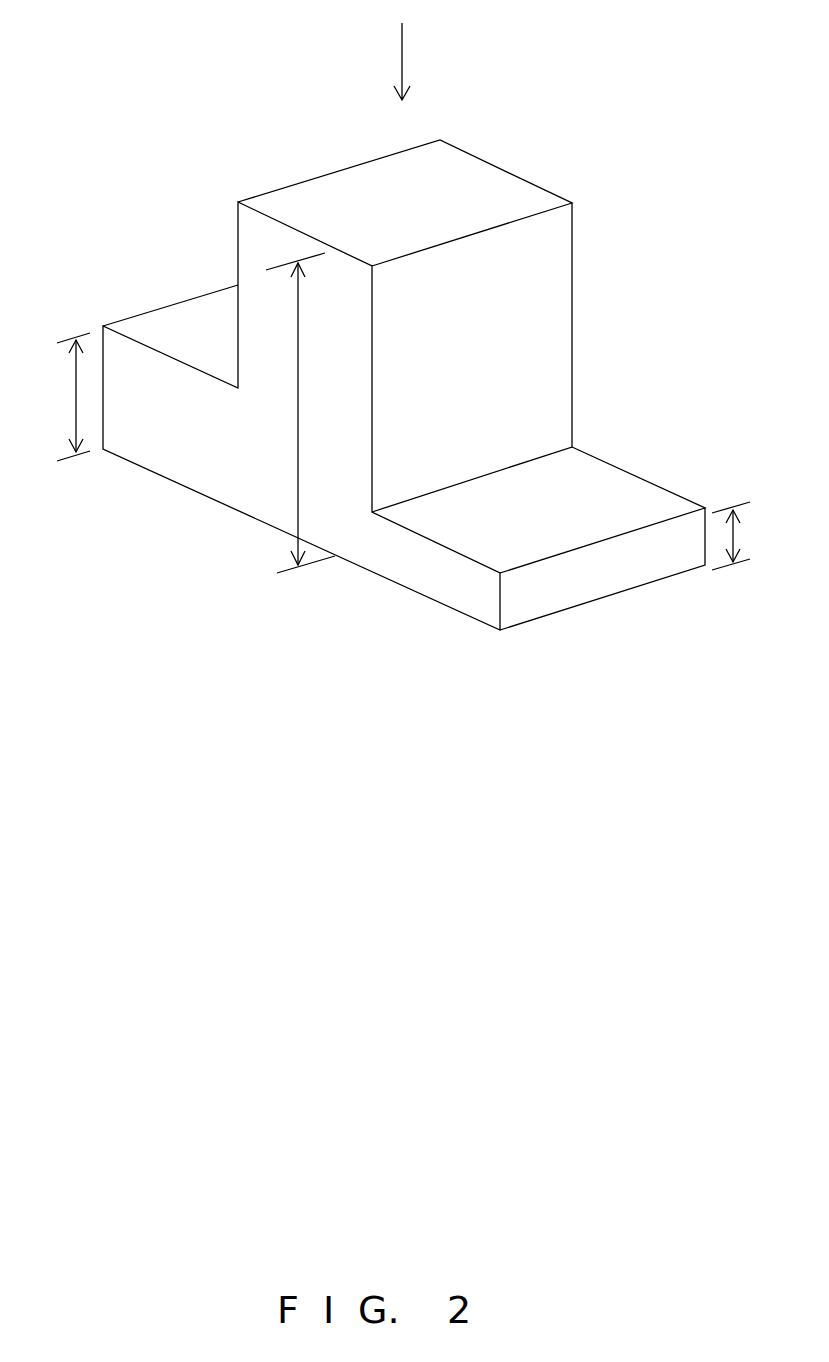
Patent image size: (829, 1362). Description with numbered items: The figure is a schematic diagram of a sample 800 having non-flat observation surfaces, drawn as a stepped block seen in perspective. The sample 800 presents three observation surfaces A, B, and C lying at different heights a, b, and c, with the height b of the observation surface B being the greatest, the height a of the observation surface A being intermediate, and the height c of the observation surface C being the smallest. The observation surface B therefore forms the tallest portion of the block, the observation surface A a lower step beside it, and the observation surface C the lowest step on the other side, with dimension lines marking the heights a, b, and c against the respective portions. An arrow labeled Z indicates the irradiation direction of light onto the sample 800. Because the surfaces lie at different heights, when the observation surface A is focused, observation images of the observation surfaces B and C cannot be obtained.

The sample 800 is at (586, 283).
The observation surface A is at (175, 320).
The observation surface B is at (333, 195).
The observation surface C is at (623, 487).
The height a is at (70, 397).
The height b is at (300, 413).
The height c is at (739, 536).
The irradiation direction of light Z is at (413, 61).